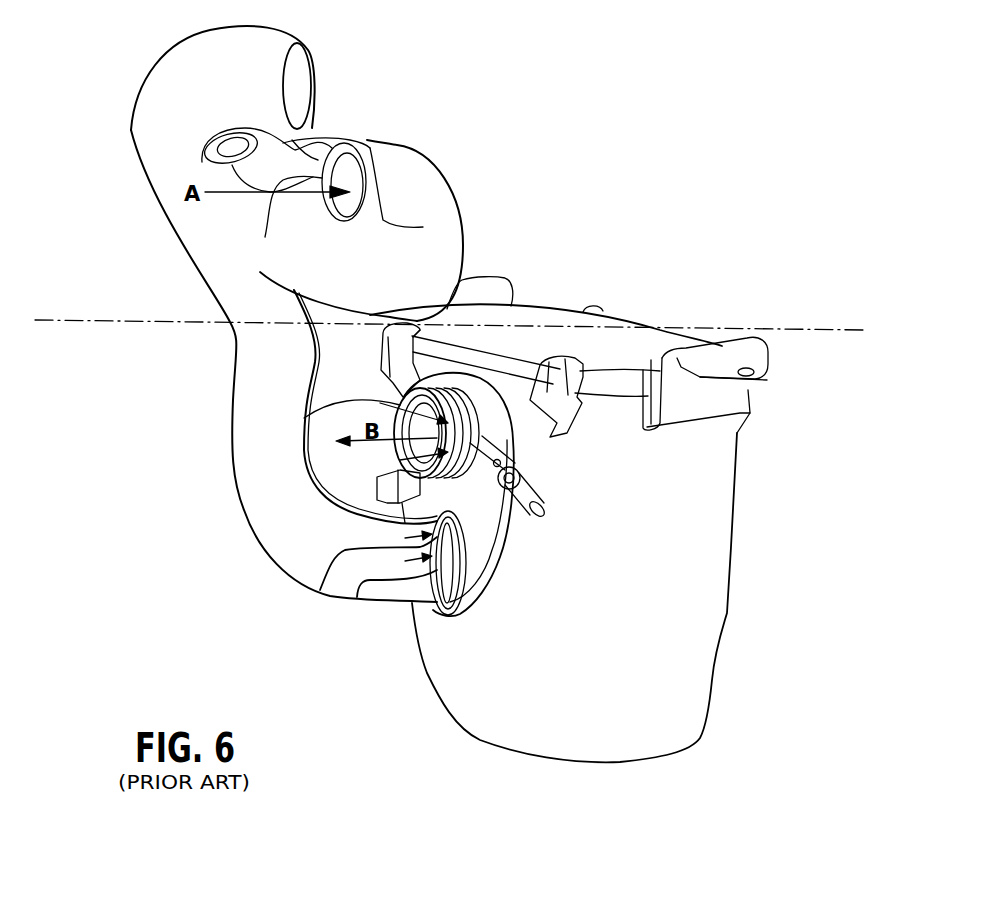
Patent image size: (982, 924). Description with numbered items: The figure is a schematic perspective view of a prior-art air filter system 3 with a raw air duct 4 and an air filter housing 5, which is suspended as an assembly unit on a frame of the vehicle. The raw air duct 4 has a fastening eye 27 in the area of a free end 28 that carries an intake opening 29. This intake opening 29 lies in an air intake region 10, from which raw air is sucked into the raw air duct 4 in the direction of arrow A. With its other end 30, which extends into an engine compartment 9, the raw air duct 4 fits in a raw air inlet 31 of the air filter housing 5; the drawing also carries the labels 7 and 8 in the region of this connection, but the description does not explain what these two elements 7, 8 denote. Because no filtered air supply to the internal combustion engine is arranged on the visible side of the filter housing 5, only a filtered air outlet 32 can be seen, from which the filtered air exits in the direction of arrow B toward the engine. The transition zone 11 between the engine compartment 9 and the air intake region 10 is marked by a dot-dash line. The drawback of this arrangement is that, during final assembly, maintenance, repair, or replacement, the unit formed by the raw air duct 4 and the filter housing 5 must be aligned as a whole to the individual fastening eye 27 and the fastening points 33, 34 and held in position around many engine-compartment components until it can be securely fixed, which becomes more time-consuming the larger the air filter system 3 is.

The air filter system 3 is at (608, 114).
The raw air duct 4 is at (243, 457).
The air filter housing 5 is at (712, 613).
The hose 7 is at (357, 597).
The bearing housing 8 is at (412, 453).
The engine compartment 9 is at (245, 626).
The air intake region 10 is at (111, 83).
The transition zone 11 is at (162, 319).
The fastening eye 27 is at (295, 141).
The free end 28 is at (146, 145).
The intake opening 29 is at (395, 144).
The other end 30 is at (413, 590).
The raw air inlet 31 is at (320, 590).
The filtered air outlet 32 is at (304, 418).
The fastening point 33 is at (497, 292).
The fastening point 34 is at (775, 363).